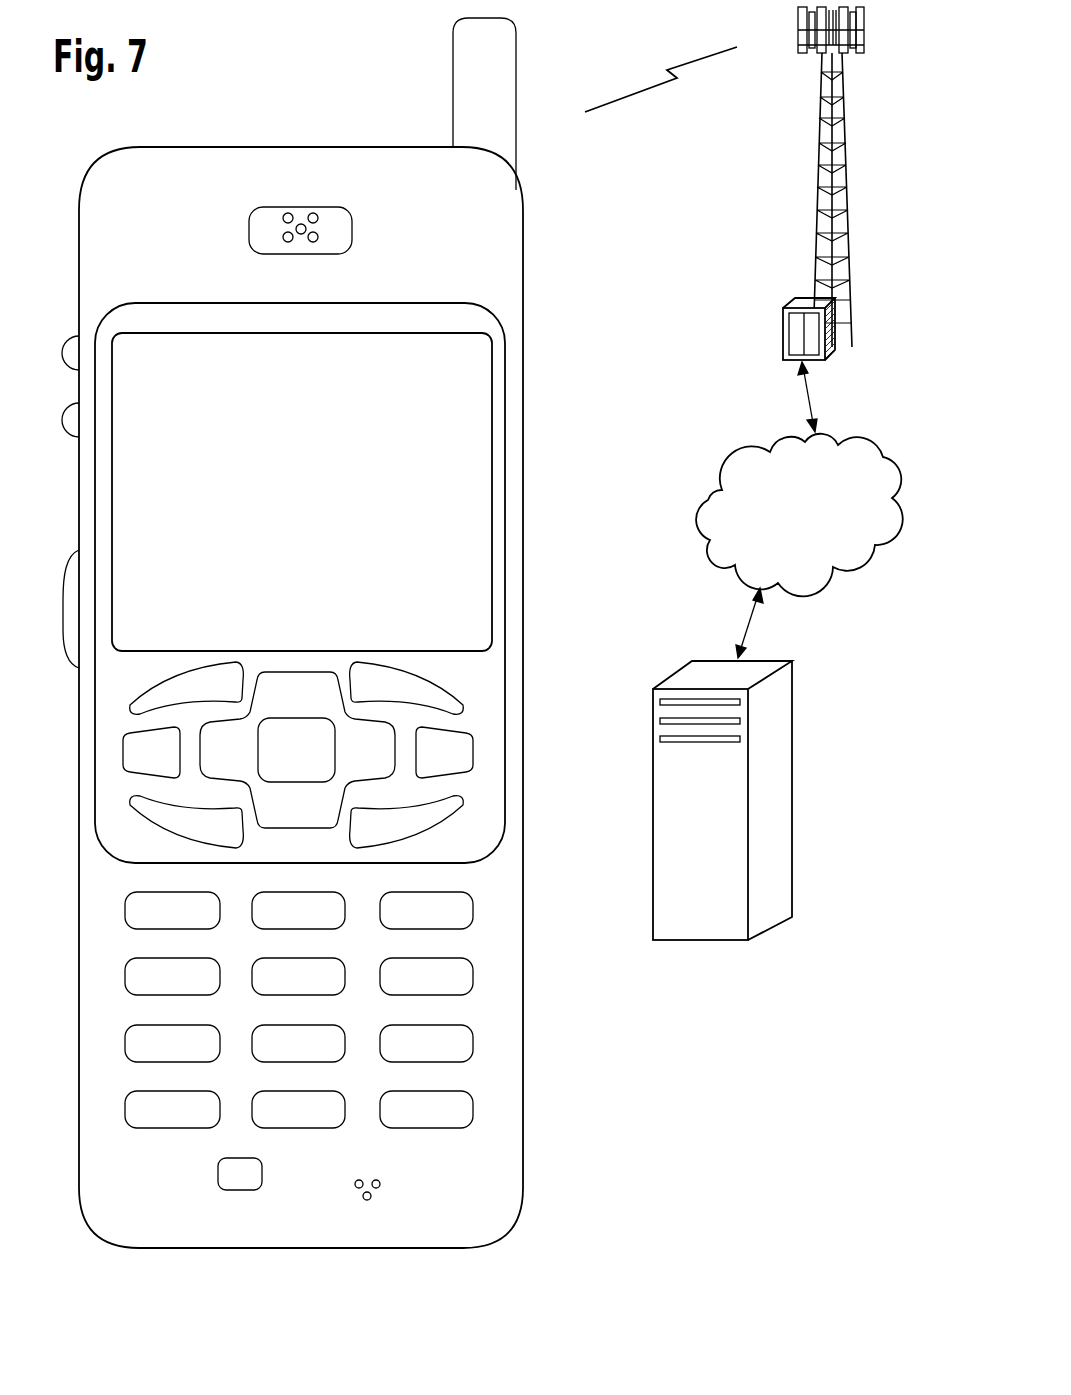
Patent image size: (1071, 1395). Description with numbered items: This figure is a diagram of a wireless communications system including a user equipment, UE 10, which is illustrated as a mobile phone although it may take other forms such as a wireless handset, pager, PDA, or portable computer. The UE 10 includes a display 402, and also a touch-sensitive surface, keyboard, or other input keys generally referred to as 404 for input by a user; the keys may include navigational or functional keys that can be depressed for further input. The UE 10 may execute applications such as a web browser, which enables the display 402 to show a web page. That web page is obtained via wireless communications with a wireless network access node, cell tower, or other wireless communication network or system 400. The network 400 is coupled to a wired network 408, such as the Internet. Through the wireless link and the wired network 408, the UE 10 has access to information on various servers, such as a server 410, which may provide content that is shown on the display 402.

The user equipment (UE) 10 is at (136, 1247).
The wireless communication network 400 is at (815, 200).
The display 402 is at (493, 347).
The input keys 404 is at (525, 658).
The wired network 408 is at (722, 568).
The server 410 is at (698, 940).